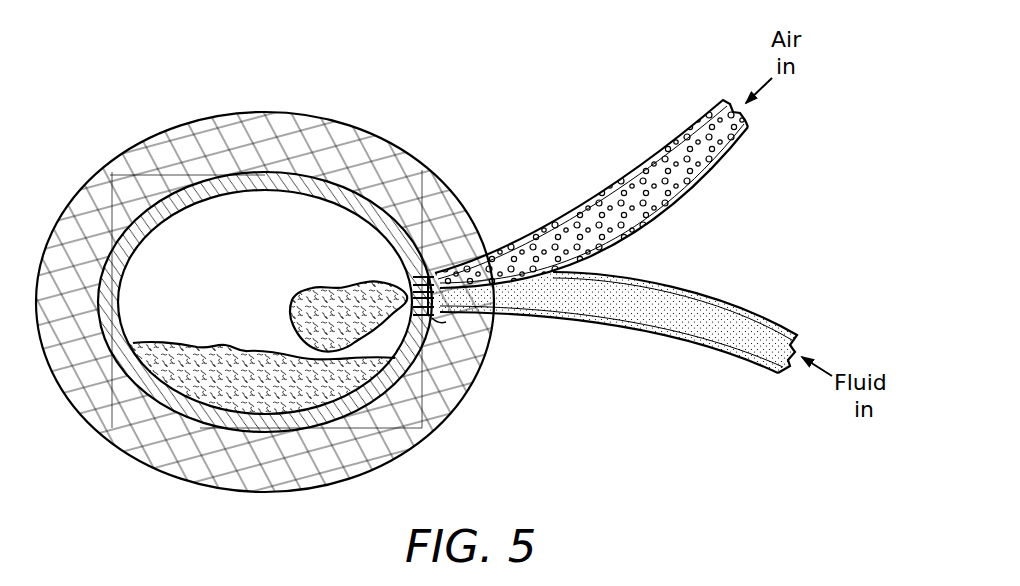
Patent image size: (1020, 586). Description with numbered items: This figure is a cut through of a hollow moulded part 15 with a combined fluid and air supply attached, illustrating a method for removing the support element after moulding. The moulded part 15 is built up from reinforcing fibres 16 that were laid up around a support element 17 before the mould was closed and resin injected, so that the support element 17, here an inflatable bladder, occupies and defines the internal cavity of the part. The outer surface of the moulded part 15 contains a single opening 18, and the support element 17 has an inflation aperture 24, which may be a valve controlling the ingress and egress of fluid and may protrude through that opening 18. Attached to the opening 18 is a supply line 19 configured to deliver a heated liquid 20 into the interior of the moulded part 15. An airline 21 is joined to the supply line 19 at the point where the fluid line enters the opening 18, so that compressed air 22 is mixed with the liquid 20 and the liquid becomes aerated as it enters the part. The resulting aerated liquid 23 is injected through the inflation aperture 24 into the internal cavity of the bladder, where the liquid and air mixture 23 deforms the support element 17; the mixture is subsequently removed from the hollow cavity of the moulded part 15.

The moulded part 15 is at (96, 153).
The reinforcing fibres 16 is at (432, 415).
The support element 17 is at (258, 180).
The opening 18 is at (447, 318).
The supply line 19 is at (616, 309).
The liquid 20 is at (632, 312).
The airline 21 is at (591, 194).
The compressed air 22 is at (684, 168).
The aerated liquid 23 is at (305, 310).
The inflation aperture 24 is at (424, 282).